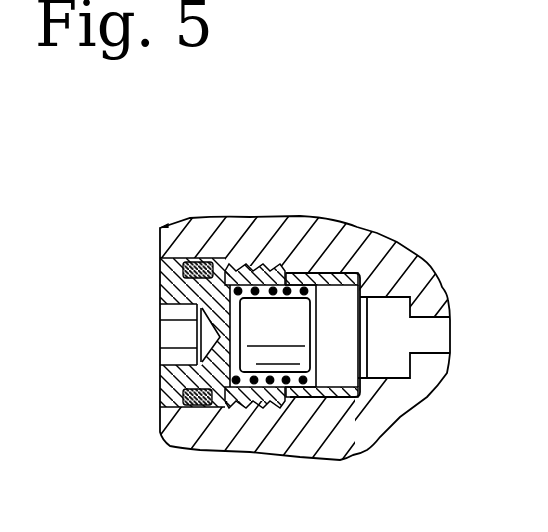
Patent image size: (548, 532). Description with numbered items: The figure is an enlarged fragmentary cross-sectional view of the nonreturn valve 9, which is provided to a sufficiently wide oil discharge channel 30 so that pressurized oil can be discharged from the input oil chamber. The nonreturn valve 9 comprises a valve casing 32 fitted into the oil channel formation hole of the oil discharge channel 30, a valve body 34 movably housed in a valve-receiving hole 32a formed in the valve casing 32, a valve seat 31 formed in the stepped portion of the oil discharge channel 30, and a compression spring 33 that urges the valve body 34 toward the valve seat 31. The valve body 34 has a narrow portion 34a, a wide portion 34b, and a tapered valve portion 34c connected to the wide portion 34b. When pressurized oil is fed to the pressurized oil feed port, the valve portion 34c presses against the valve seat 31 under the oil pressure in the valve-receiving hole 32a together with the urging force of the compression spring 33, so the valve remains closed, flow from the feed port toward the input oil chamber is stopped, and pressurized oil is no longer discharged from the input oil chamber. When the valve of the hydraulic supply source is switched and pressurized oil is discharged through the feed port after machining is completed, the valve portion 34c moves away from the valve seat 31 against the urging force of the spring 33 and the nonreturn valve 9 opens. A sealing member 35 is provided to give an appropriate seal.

The nonreturn valve 9 is at (158, 391).
The oil discharge channel 30 is at (290, 393).
The valve seat 31 is at (368, 288).
The valve casing 32 is at (160, 278).
The valve-receiving hole 32a is at (261, 290).
The compression spring 33 is at (257, 383).
The valve body 34 is at (377, 319).
The narrow portion 34a is at (275, 335).
The wide portion 34b is at (333, 378).
The tapered valve portion 34c is at (365, 338).
The sealing member 35 is at (191, 406).